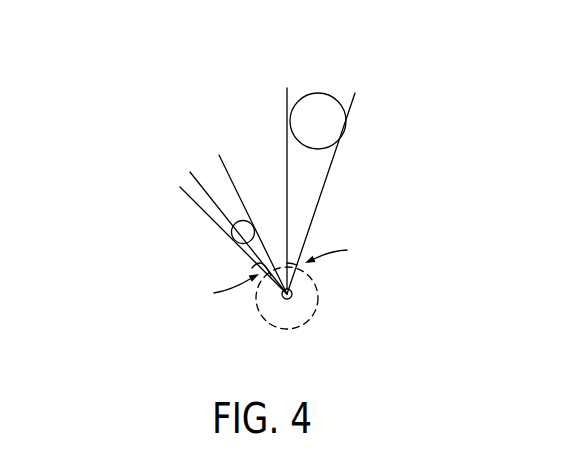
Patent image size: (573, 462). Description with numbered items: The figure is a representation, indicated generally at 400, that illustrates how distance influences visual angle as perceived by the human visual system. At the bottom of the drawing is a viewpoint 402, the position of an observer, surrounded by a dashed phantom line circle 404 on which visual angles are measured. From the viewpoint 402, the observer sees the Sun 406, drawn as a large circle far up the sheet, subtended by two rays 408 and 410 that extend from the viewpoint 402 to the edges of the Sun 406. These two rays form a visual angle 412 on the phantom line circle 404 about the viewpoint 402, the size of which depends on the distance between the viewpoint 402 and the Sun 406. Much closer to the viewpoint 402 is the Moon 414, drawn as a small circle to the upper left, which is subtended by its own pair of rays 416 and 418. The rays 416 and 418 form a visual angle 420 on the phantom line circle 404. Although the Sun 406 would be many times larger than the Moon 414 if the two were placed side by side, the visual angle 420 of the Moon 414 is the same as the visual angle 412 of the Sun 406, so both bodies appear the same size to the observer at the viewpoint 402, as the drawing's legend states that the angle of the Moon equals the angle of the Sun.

The representation of the influence of distance on visual angle 400 is at (449, 102).
The viewpoint 402 is at (294, 298).
The phantom line circle 404 is at (256, 313).
The Sun 406 is at (328, 93).
The ray 408 is at (330, 173).
The ray 410 is at (287, 150).
The visual angle 412 is at (300, 253).
The Moon 414 is at (232, 221).
The ray 416 is at (188, 198).
The ray 418 is at (237, 192).
The visual angle 420 is at (252, 268).